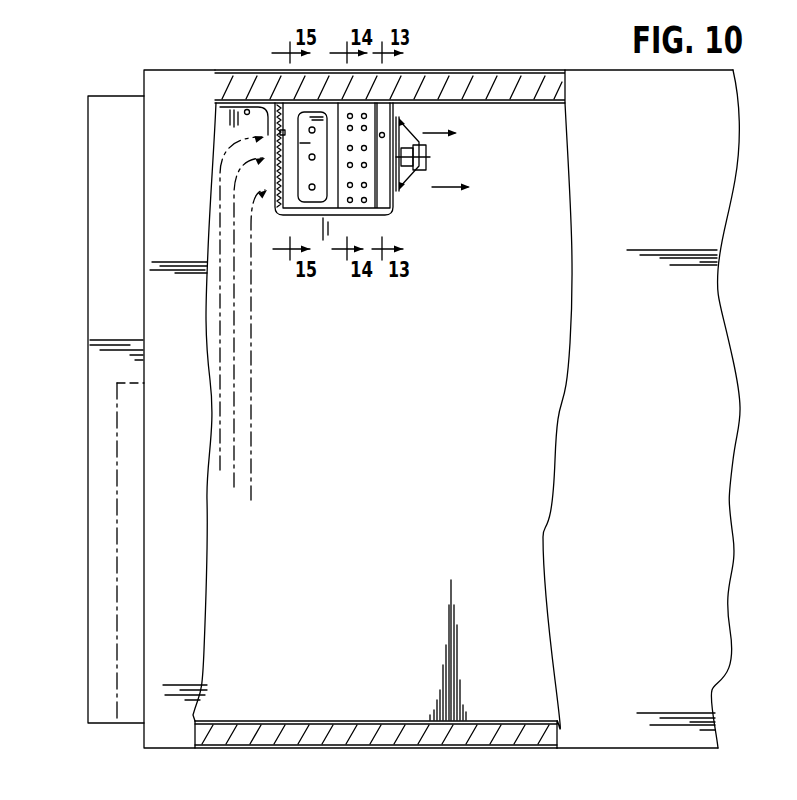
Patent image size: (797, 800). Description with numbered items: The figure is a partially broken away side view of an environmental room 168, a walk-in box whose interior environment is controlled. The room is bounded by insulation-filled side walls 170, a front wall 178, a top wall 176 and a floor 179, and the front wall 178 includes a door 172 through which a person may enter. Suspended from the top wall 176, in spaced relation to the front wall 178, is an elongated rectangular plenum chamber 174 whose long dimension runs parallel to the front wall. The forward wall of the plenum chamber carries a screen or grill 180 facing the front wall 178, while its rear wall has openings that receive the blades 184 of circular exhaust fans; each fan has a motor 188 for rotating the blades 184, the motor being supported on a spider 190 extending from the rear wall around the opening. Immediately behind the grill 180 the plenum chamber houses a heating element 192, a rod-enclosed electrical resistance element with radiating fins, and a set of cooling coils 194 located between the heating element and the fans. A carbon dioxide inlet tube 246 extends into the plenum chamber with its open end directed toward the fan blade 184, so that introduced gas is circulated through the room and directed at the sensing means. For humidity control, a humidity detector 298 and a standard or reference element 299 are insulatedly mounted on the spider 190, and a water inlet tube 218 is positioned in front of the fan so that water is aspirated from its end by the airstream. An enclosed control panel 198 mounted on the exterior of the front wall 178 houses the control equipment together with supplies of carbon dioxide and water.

The room 168 is at (144, 87).
The side walls 170 is at (596, 82).
The door 172 is at (115, 407).
The plenum chamber 174 is at (369, 219).
The top wall 176 is at (451, 71).
The front wall 178 is at (144, 81).
The floor 179 is at (467, 748).
The screen or grill 180 is at (268, 128).
The blades 184 is at (427, 147).
The motor 188 is at (428, 158).
The spider 190 is at (397, 128).
The heating element 192 is at (310, 193).
The cooling coils 194 is at (367, 201).
The control panel 198 is at (84, 139).
The water inlet tube 218 is at (383, 133).
The carbon dioxide inlet tube 246 is at (244, 110).
The humidity detector 298 is at (416, 137).
The standard or reference element 299 is at (411, 185).